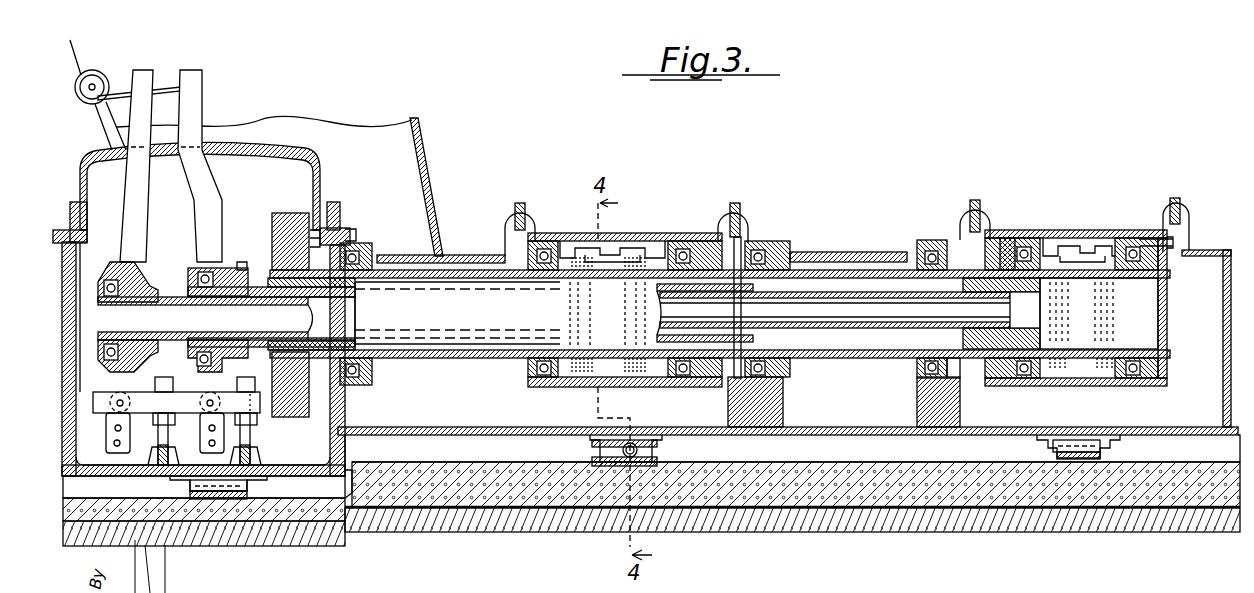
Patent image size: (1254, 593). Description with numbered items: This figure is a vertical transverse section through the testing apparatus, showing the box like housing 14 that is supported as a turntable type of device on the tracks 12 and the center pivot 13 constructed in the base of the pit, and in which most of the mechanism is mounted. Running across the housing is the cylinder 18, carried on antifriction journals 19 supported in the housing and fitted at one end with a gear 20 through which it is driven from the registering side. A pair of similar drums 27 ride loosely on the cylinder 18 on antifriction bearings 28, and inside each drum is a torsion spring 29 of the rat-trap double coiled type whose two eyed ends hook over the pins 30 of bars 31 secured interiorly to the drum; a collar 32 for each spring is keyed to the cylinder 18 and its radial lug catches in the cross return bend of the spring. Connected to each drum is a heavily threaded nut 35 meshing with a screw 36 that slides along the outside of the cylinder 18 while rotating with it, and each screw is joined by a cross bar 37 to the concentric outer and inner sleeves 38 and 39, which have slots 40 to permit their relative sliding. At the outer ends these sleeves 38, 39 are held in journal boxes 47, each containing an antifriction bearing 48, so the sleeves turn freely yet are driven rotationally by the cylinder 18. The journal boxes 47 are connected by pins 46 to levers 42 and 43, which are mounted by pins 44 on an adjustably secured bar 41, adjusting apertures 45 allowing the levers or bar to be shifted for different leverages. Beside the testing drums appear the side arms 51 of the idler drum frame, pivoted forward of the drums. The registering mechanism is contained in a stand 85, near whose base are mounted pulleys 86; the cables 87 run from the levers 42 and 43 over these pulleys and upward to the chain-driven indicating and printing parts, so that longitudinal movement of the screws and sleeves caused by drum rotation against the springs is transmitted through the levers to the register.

The tracks 12 is at (237, 500).
The center pivot 13 is at (622, 456).
The box like housing 14 is at (1200, 266).
The cylinder 18 is at (497, 363).
The antifriction journals 19 is at (367, 375).
The gear 20 is at (285, 222).
The drums 27 is at (586, 231).
The antifriction bearings 28 is at (535, 380).
The torsion spring 29 is at (582, 372).
The pins 30 is at (1135, 223).
The bars 31 is at (630, 241).
The collar 32 is at (620, 374).
The nut 35 is at (729, 247).
The screw 36 is at (766, 250).
The cross bar 37 is at (741, 311).
The outer concentric sleeve 38 is at (705, 313).
The inner concentric sleeve 39 is at (822, 298).
The slots 40 is at (719, 278).
The bar 41 is at (185, 398).
The lever 42 is at (128, 242).
The lever 43 is at (208, 216).
The pins 44 is at (117, 411).
The adjusting apertures 45 is at (115, 443).
The pins 46 is at (131, 323).
The journal box 47 is at (136, 282).
The antifriction bearing 48 is at (93, 320).
The side arms 51 is at (517, 206).
The stand 85 is at (425, 165).
The pulleys 86 is at (88, 104).
The cables 87 is at (165, 82).